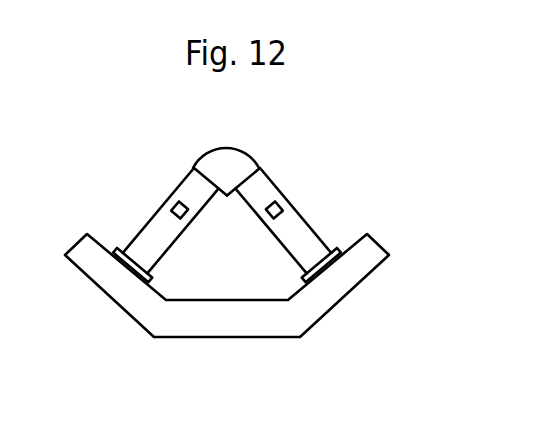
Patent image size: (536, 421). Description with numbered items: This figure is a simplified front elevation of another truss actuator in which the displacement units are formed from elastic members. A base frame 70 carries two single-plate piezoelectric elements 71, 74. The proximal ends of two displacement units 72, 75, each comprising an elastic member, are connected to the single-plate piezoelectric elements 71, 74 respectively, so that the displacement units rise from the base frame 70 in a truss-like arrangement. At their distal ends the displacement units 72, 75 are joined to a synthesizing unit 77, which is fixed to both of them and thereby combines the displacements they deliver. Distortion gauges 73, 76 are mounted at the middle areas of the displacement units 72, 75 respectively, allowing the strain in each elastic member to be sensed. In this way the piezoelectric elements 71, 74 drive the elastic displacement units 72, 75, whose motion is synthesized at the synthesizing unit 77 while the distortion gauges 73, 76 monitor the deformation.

The base frame 70 is at (185, 323).
The single-plate piezoelectric element 71 is at (322, 268).
The displacement unit 72 is at (352, 235).
The distortion gauge 73 is at (264, 200).
The single-plate piezoelectric element 74 is at (130, 267).
The displacement unit 75 is at (173, 158).
The distortion gauge 76 is at (191, 216).
The synthesizing unit 77 is at (225, 162).